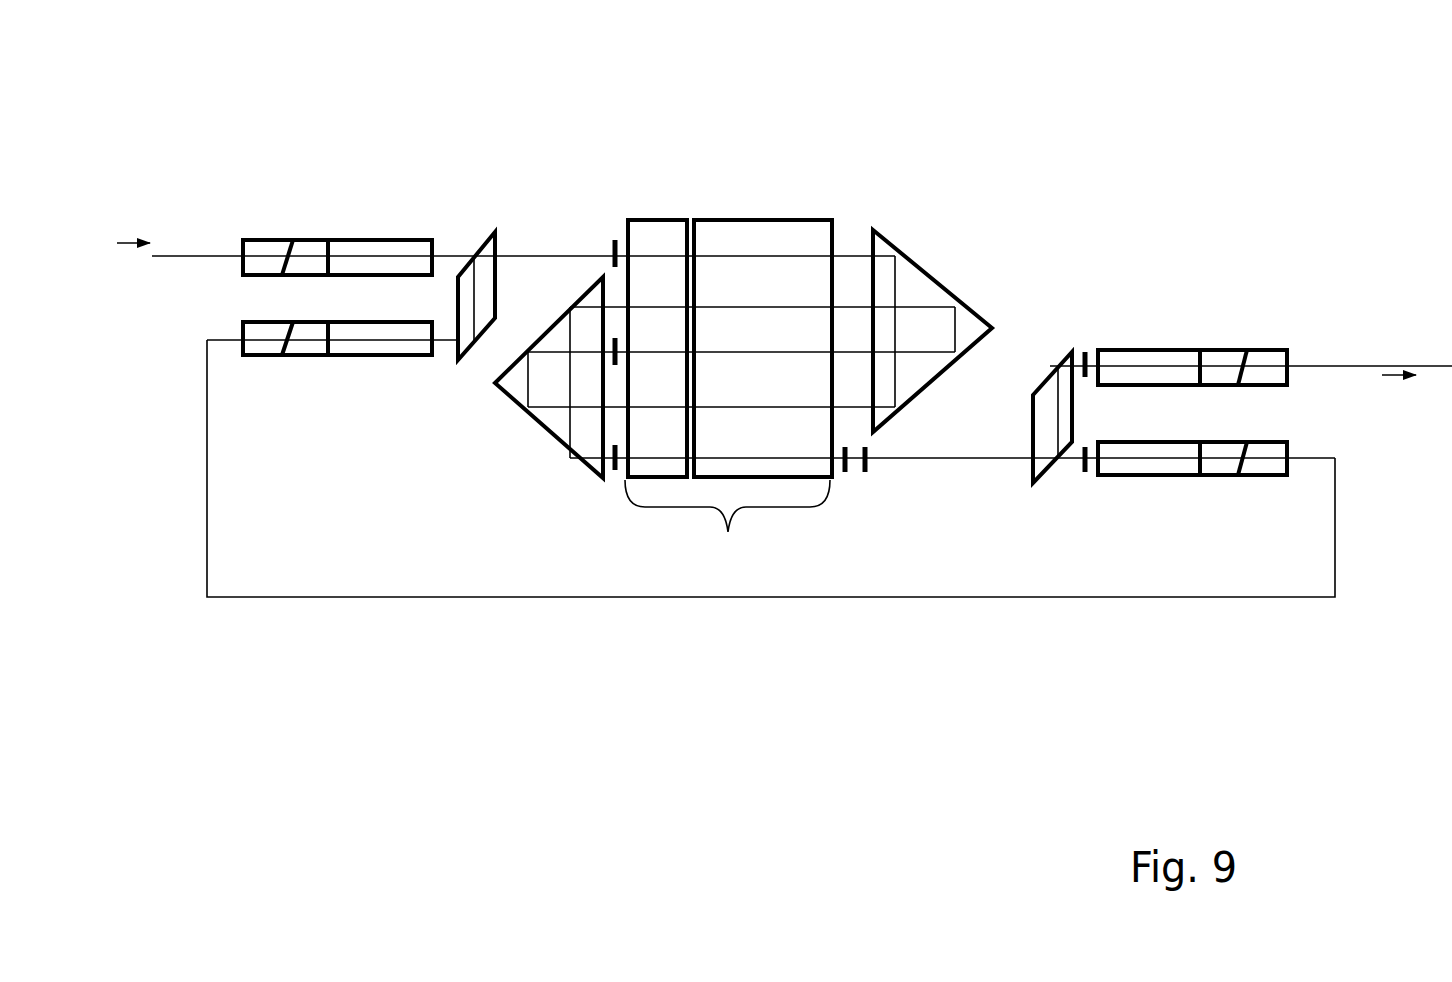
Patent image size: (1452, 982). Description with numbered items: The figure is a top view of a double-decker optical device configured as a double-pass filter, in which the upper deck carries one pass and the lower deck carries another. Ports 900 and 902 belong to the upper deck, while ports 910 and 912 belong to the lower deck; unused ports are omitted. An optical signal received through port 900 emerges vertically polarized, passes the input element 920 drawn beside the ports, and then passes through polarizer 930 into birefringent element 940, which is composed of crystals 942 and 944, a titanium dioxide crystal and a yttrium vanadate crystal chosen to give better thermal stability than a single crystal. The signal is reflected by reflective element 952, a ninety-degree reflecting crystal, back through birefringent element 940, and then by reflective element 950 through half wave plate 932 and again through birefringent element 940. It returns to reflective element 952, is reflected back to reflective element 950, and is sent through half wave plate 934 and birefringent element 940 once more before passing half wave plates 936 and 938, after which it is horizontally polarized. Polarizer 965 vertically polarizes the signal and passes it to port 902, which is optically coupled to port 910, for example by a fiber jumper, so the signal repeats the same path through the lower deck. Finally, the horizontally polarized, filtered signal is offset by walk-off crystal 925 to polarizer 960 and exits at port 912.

The port 900 is at (366, 232).
The port 910 is at (238, 323).
The input birefringent plate 920 is at (488, 231).
The polarizer 930 is at (613, 237).
The half wave plate 932 is at (609, 345).
The half wave plate 934 is at (616, 479).
The crystal 942 is at (659, 217).
The crystal 944 is at (756, 213).
The birefringent element 940 is at (727, 527).
The reflective element 950 is at (537, 428).
The reflective element 952 is at (935, 277).
The half wave plate 936 is at (844, 478).
The half wave plate 938 is at (869, 478).
The walk-off crystal 925 is at (1027, 481).
The polarizer 960 is at (1088, 345).
The polarizer 965 is at (1086, 478).
The port 912 is at (1213, 346).
The port 902 is at (1292, 450).